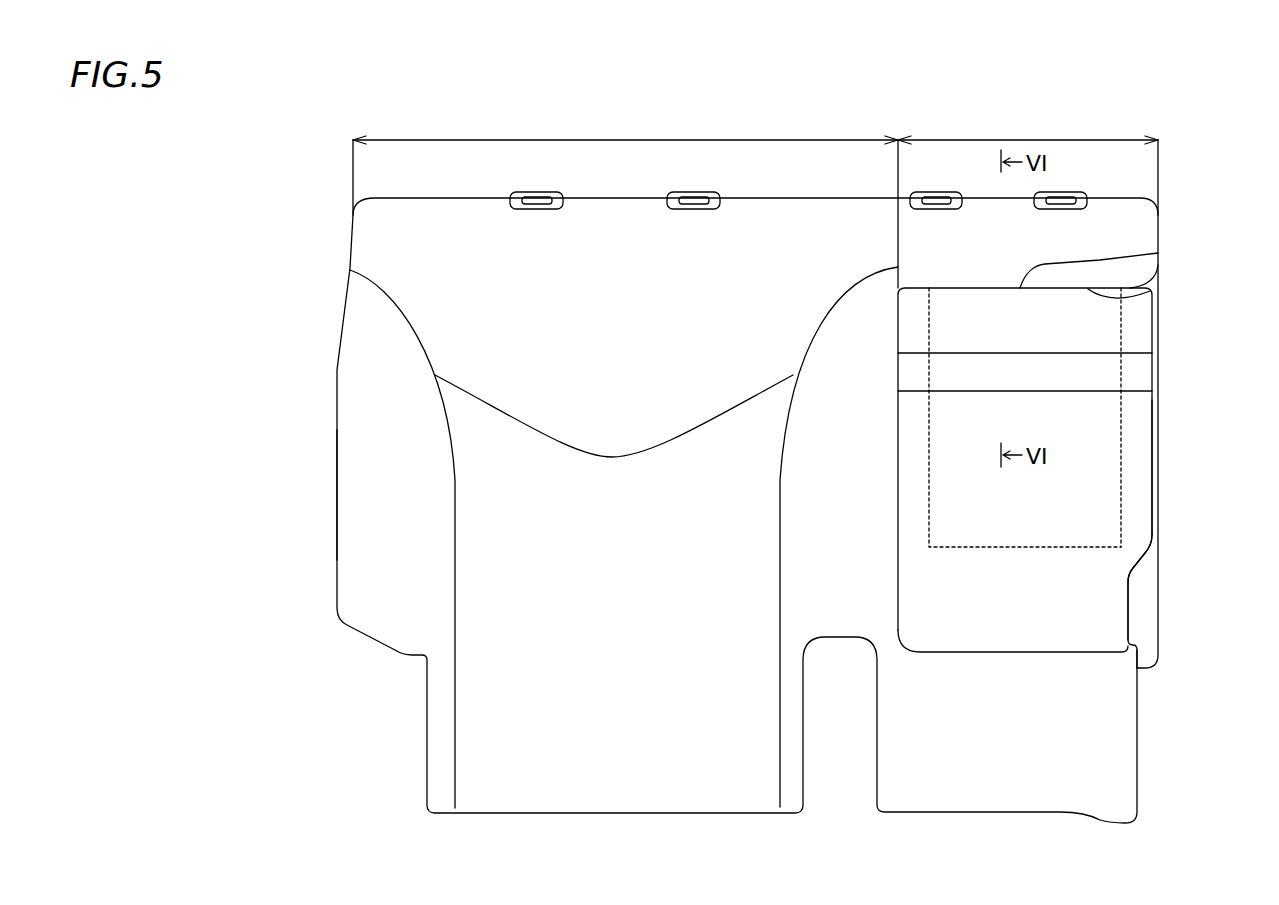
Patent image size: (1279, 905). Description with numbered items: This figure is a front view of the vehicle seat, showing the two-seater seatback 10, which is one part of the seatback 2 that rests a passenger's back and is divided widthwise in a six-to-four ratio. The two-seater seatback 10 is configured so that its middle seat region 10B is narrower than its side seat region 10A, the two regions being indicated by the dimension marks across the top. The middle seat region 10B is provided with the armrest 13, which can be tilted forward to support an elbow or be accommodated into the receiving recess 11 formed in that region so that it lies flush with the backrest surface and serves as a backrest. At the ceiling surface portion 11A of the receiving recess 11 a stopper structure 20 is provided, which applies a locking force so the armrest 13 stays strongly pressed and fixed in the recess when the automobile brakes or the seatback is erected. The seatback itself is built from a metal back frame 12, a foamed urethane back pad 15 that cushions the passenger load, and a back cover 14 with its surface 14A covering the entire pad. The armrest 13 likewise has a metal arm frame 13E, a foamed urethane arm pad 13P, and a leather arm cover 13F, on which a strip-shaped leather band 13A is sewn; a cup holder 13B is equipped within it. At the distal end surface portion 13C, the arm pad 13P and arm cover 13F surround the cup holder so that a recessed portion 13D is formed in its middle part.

The two-seater seatback 10 is at (695, 481).
The seatback 2 is at (296, 240).
The side seat region 10A is at (625, 130).
The middle seat region 10B is at (1028, 130).
The receiving recess 11 is at (1156, 325).
The ceiling surface portion 11A is at (1176, 292).
The stopper structure 20 is at (1150, 291).
The back frame 12 is at (311, 495).
The back pad 15 is at (388, 489).
The back cover 14 is at (336, 539).
The side cover surface 14A is at (388, 420).
The armrest 13 is at (1146, 419).
The band 13A is at (1135, 370).
The cup holder 13B is at (1097, 443).
The distal end surface portion 13C is at (1145, 264).
The recessed portion 13D is at (1158, 253).
The arm frame 13E is at (1200, 579).
The arm pad 13P is at (1135, 525).
The arm cover 13F is at (1135, 493).